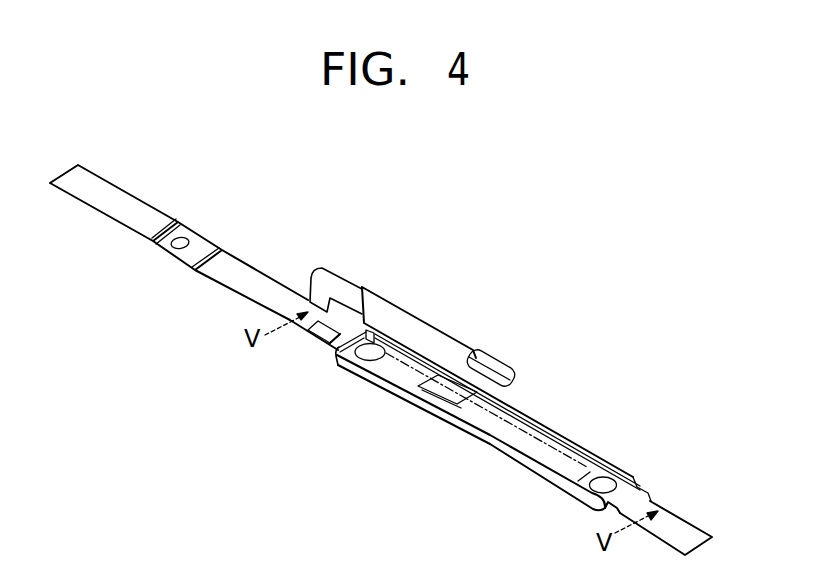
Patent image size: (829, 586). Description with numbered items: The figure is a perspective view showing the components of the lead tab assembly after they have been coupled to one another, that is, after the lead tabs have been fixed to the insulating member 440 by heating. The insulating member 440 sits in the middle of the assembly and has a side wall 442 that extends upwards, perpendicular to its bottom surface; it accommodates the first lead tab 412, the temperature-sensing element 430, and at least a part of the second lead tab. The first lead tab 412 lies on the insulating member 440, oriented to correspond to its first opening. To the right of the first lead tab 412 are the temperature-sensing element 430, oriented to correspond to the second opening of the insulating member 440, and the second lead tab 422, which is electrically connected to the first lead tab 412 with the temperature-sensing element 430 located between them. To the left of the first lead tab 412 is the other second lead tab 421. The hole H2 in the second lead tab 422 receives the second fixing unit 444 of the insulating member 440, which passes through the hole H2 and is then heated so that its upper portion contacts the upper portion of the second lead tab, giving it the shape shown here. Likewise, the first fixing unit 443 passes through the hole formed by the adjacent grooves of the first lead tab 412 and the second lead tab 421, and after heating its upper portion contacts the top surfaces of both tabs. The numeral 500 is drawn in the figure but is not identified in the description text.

The second lead tab 421 is at (251, 282).
The hole H2 is at (185, 239).
The first lead tab 412 is at (412, 370).
The first fixing unit 443 is at (372, 351).
The side wall 442 is at (527, 413).
The insulating member 440 is at (546, 420).
The fastening member 500 is at (340, 356).
The temperature-sensing element 430 is at (463, 408).
The second fixing unit 444 is at (608, 485).
The second lead tab 422 is at (553, 452).